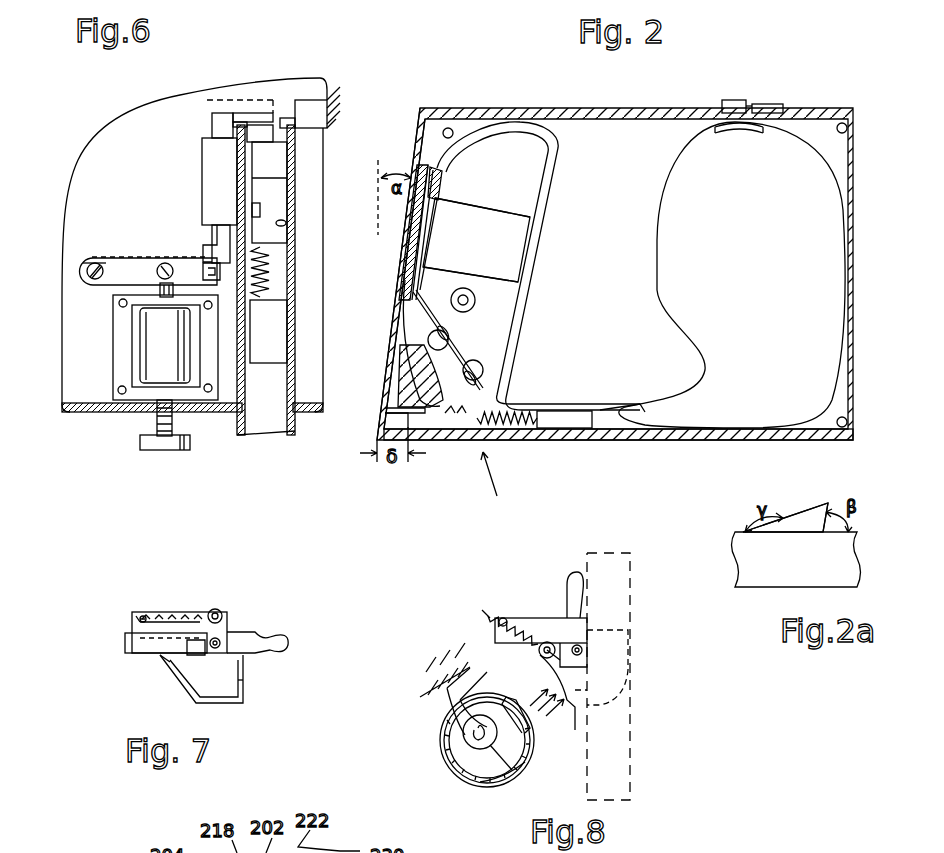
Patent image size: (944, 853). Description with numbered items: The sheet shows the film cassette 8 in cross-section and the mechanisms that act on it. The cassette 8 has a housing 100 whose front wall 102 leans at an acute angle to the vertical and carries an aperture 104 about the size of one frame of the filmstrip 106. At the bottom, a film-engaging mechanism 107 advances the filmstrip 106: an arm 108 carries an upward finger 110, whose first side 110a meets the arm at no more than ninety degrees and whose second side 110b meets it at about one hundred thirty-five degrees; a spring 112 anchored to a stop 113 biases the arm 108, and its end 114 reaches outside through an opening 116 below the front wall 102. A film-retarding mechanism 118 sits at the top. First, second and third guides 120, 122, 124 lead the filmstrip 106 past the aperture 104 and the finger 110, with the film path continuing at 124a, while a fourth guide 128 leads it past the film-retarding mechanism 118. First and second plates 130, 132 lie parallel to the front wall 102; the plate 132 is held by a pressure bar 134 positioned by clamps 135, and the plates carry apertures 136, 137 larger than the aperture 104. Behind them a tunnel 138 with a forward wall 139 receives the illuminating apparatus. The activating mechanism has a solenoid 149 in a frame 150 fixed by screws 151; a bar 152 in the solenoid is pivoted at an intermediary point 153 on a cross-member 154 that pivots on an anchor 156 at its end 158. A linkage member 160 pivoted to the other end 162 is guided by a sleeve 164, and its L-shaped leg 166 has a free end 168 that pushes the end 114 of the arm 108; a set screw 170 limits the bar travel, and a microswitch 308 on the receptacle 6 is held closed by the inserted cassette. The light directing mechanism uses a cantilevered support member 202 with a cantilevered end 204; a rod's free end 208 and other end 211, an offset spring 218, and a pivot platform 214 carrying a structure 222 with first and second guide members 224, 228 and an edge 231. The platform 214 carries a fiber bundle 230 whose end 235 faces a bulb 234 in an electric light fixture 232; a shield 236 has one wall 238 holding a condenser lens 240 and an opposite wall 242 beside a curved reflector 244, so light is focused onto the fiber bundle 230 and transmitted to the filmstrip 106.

In FIG. 6, the receptacle 6 is at (236, 124).
In FIG. 6, the cassette 8 is at (284, 224).
In FIG. 2, the housing 100 is at (485, 112).
In FIG. 2, the front wall 102 is at (423, 130).
In FIG. 2, the aperture 104 is at (409, 228).
In FIG. 2, the filmstrip 106 is at (700, 389).
In FIG. 2, the film-engaging mechanism 107 is at (502, 480).
In FIG. 6, the arm 108 is at (323, 260).
In FIG. 2, the arm 108 is at (461, 441).
In FIG. 2a, the arm 108 is at (765, 579).
In FIG. 2, the finger 110 is at (452, 413).
In FIG. 2a, the finger 110 is at (796, 527).
In FIG. 2a, the first side 110a is at (829, 530).
In FIG. 2a, the second side 110b is at (800, 523).
In FIG. 6, the spring 112 is at (272, 267).
In FIG. 2, the spring 112 is at (520, 426).
In FIG. 6, the stop 113 is at (275, 328).
In FIG. 2, the stop 113 is at (568, 428).
In FIG. 2, the end 114 is at (384, 428).
In FIG. 2, the opening 116 is at (387, 410).
In FIG. 2, the film-retarding mechanism 118 is at (771, 98).
In FIG. 2, the first guide 120 is at (395, 381).
In FIG. 2, the second guide 122 is at (408, 360).
In FIG. 2, the third guide 124 is at (549, 213).
In FIG. 2, the loop end 124a is at (602, 411).
In FIG. 2, the fourth guide 128 is at (716, 134).
In FIG. 2, the first plate 130 is at (423, 176).
In FIG. 2, the second plate 132 is at (443, 178).
In FIG. 2, the pressure bar 134 is at (451, 298).
In FIG. 2, the clamps 135 is at (449, 339).
In FIG. 2, the aperture 136 is at (414, 243).
In FIG. 2, the aperture 137 is at (426, 259).
In FIG. 2, the tunnel 138 is at (518, 241).
In FIG. 2, the forward wall 139 is at (441, 226).
In FIG. 6, the solenoid 149 is at (147, 353).
In FIG. 6, the frame 150 is at (122, 318).
In FIG. 6, the screws 151 is at (146, 311).
In FIG. 6, the bar 152 is at (160, 290).
In FIG. 6, the intermediary point 153 is at (158, 266).
In FIG. 6, the cross-member 154 is at (118, 265).
In FIG. 6, the anchor 156 is at (88, 272).
In FIG. 6, the end 158 is at (84, 263).
In FIG. 6, the linkage member 160 is at (217, 237).
In FIG. 6, the end 162 is at (205, 268).
In FIG. 6, the sleeve 164 is at (217, 177).
In FIG. 6, the L-shaped leg 166 is at (232, 118).
In FIG. 6, the free end 168 is at (278, 112).
In FIG. 6, the set screw 170 is at (150, 446).
In FIG. 6, the push-button microswitch 308 is at (288, 118).
In FIG. 7, the cantilevered support member 202 is at (183, 612).
In FIG. 8, the cantilevered support member 202 is at (545, 625).
In FIG. 7, the cantilevered end 204 is at (134, 614).
In FIG. 8, the free end 208 is at (484, 612).
In FIG. 7, the other end 211 is at (205, 610).
In FIG. 7, the pivot platform 214 is at (160, 660).
In FIG. 7, the offset spring 218 is at (153, 612).
In FIG. 7, the structure 222 is at (232, 628).
In FIG. 8, the structure 222 is at (577, 650).
In FIG. 7, the first guide member 224 is at (283, 640).
In FIG. 7, the second guide member 228 is at (135, 647).
In FIG. 7, the fiber bundle 230 is at (196, 678).
In FIG. 8, the fiber bundle 230 is at (552, 668).
In FIG. 7, the edge 231 is at (243, 682).
In FIG. 8, the electric light fixture 232 is at (455, 690).
In FIG. 8, the light bulb 234 is at (530, 775).
In FIG. 8, the end 235 is at (552, 683).
In FIG. 8, the shield 236 is at (455, 785).
In FIG. 8, the wall 238 is at (515, 766).
In FIG. 8, the condenser lens 240 is at (533, 722).
In FIG. 8, the opposite wall 242 is at (446, 752).
In FIG. 8, the curved reflector 244 is at (448, 742).